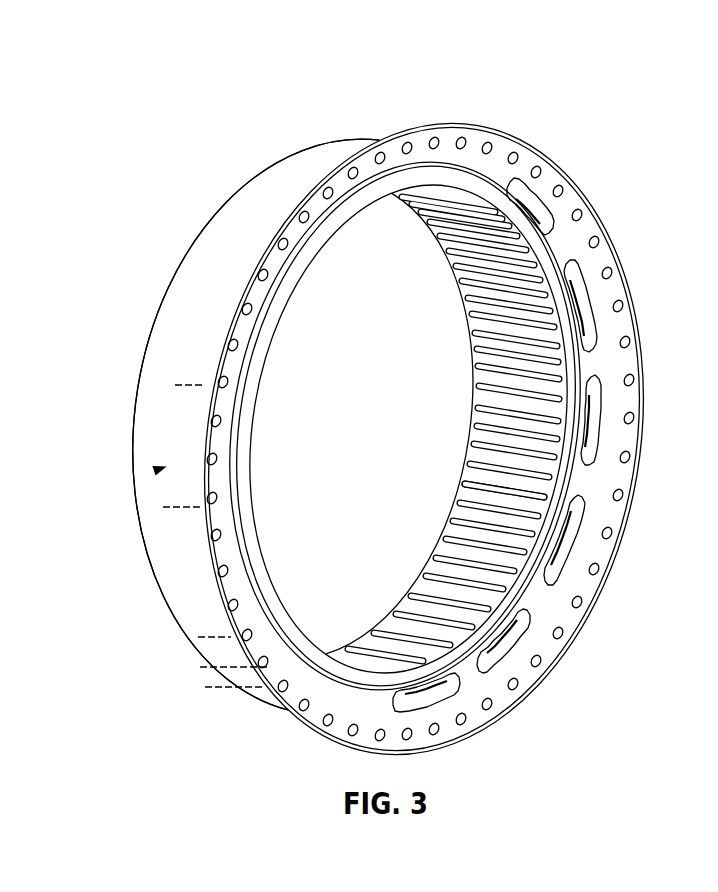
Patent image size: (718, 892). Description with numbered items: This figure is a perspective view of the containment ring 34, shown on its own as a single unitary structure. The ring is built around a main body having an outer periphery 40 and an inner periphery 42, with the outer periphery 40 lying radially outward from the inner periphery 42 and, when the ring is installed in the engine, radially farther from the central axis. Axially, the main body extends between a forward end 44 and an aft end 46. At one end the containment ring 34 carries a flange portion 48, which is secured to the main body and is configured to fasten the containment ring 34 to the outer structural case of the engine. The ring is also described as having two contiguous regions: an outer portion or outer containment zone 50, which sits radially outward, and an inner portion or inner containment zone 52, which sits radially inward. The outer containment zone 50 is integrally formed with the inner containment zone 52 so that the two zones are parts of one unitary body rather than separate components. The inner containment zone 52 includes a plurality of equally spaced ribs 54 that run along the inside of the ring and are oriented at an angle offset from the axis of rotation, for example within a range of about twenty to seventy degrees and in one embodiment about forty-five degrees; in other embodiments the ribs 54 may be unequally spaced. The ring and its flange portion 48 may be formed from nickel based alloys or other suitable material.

The containment ring 34 is at (380, 420).
The outer periphery 40 is at (257, 190).
The inner periphery 42 is at (535, 257).
The forward end 44 is at (217, 217).
The aft end 46 is at (472, 183).
The flange portion 48 is at (473, 140).
The outer containment zone 50 is at (158, 470).
The inner containment zone 52 is at (477, 483).
The ribs 54 is at (508, 520).